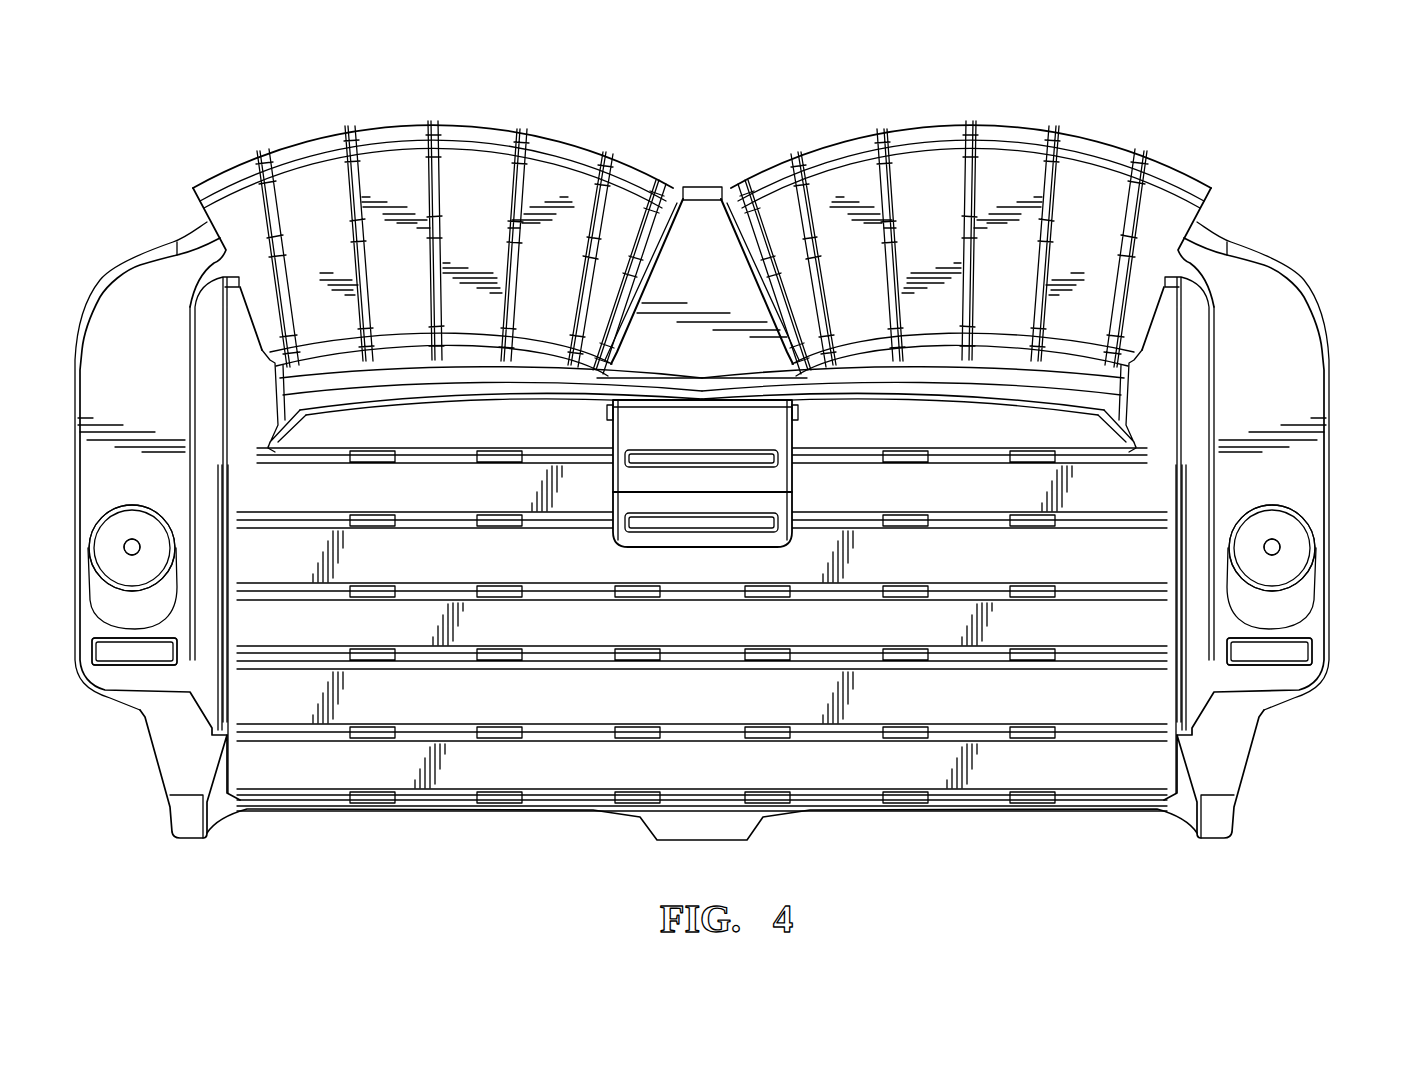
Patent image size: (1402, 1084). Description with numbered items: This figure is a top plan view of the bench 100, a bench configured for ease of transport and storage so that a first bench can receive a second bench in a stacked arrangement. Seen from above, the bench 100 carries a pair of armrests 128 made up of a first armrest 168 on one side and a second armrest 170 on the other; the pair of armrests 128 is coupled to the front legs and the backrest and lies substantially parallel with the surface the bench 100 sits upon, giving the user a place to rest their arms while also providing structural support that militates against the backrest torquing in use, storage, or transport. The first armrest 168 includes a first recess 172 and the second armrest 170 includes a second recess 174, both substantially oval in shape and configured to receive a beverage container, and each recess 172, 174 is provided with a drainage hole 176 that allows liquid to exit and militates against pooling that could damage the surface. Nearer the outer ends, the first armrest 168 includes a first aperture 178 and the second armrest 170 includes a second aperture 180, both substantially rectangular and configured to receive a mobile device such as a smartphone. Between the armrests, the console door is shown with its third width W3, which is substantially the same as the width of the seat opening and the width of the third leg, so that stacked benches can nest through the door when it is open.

The bench 100 is at (700, 453).
The pair of armrests 128 is at (700, 513).
The first armrest 168 is at (123, 385).
The second armrest 170 is at (1280, 385).
The first recess 172 is at (103, 545).
The second recess 174 is at (1296, 545).
The drainage hole 176 is at (133, 543).
The first aperture 178 is at (107, 648).
The second aperture 180 is at (1297, 648).
The third width W3 is at (723, 488).